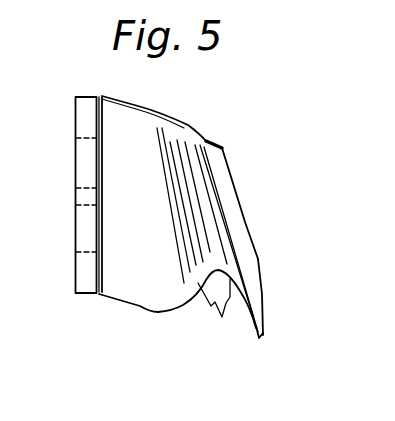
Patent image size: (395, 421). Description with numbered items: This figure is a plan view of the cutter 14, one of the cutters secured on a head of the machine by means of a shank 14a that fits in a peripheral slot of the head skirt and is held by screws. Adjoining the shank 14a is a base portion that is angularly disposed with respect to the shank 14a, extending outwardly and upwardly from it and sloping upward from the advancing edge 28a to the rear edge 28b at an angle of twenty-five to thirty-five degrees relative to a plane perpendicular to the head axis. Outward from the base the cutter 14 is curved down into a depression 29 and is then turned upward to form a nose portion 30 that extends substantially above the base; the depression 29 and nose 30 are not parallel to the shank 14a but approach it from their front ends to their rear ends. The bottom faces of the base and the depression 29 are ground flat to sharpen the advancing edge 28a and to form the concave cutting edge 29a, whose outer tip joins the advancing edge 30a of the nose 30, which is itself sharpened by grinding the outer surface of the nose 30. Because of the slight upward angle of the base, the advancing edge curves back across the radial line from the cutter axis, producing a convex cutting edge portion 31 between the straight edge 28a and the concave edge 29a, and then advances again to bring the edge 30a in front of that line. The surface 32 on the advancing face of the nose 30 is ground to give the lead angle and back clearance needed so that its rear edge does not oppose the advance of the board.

The cutter 14 is at (61, 195).
The shank 14a is at (60, 195).
The advancing edge 28a is at (113, 310).
The rear edge 28b is at (162, 112).
The depression 29 is at (207, 204).
The concave cutting edge 29a is at (219, 311).
The nose portion 30 is at (255, 203).
The advancing edge of nose 30a is at (257, 336).
The convex cutting edge portion 31 is at (207, 314).
The back clearance surface 32 is at (287, 297).